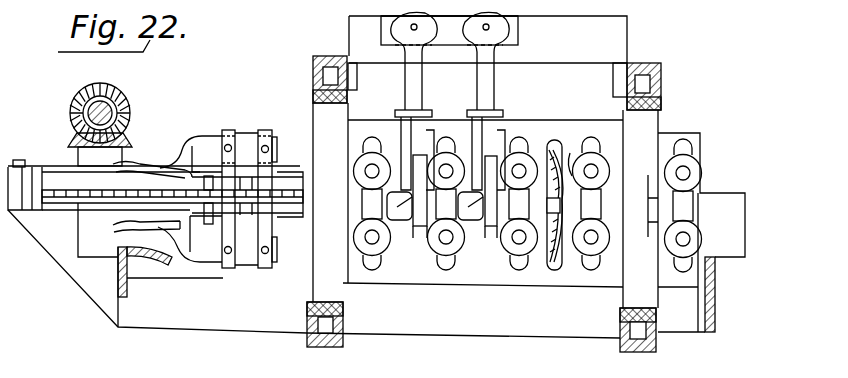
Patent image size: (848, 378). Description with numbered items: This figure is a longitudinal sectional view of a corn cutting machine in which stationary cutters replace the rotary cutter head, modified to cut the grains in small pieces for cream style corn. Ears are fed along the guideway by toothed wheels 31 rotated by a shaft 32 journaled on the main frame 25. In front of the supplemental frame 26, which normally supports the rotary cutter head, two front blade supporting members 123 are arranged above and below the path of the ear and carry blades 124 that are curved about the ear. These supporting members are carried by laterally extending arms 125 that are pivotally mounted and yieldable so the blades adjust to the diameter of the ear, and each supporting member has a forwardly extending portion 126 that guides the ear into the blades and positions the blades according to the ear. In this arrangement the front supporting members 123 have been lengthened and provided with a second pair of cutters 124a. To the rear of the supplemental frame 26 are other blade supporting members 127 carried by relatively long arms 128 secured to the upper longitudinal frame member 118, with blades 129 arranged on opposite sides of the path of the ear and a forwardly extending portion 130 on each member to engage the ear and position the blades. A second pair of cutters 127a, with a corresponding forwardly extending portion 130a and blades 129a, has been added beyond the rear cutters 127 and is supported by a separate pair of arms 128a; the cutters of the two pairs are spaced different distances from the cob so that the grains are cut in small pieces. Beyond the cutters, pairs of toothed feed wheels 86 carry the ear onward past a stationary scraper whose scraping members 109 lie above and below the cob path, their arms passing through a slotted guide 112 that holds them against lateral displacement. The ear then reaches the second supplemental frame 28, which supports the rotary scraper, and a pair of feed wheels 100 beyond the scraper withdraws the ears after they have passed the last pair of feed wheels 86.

The frame 25 is at (728, 294).
The supplemental frame 26 is at (330, 352).
The supplemental frame 28 is at (635, 370).
The toothed wheels 31 is at (74, 198).
The shaft 32 is at (80, 98).
The toothed wheels 86 is at (537, 158).
The feed wheels 100 is at (703, 173).
The scraping members 109 is at (562, 162).
The slotted guide 112 is at (599, 199).
The longitudinal frame member 118 is at (471, 29).
The blade supporting members 123 is at (246, 148).
The blades 124 is at (259, 173).
The second pair of cutters 124a is at (214, 173).
The laterally extending arms 125 is at (160, 159).
The forwardly extending portion 126 is at (115, 171).
The blade supporting members 127 is at (397, 207).
The second pair of cutters 127a is at (468, 207).
The arms 128 is at (412, 87).
The separate pair of arms 128a is at (484, 88).
The blades 129 is at (418, 232).
The slide 129a is at (487, 227).
The forwardly extending portion 130 is at (396, 187).
The clamp bar 130a is at (470, 190).